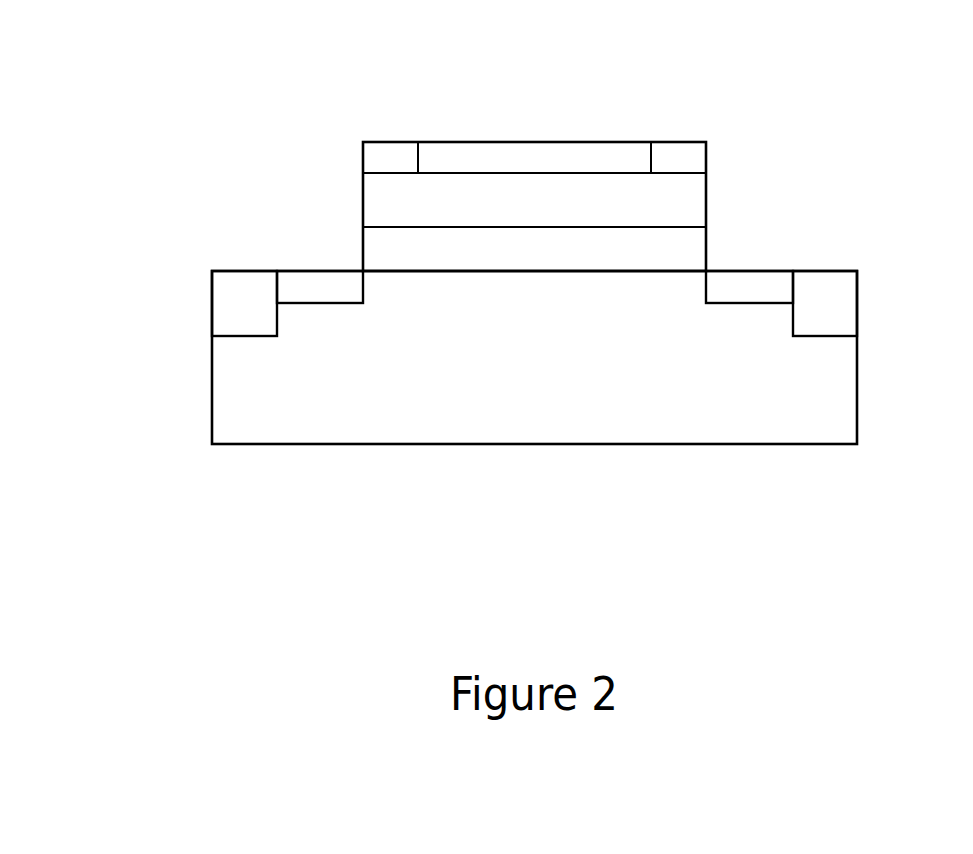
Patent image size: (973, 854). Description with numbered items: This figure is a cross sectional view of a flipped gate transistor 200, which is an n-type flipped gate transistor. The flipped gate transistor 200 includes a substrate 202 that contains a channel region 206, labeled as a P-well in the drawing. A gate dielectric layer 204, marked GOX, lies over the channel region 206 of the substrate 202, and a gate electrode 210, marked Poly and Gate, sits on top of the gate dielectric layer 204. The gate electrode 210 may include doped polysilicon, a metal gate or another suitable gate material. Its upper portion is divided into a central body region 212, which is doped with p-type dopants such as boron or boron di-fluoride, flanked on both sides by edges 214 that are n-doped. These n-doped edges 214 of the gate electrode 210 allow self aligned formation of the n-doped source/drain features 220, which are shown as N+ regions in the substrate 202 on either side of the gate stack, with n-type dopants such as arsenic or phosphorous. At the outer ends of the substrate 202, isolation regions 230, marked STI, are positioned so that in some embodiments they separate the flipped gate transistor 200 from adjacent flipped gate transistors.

The flipped gate transistor 200 is at (890, 79).
The substrate 202 is at (845, 390).
The gate dielectric layer 204 is at (382, 250).
The channel region 206 is at (535, 295).
The gate electrode 210 is at (335, 134).
The body region 212 is at (578, 157).
The edges 214 is at (408, 148).
The source/drain features 220 is at (288, 280).
The isolation regions 230 is at (223, 287).